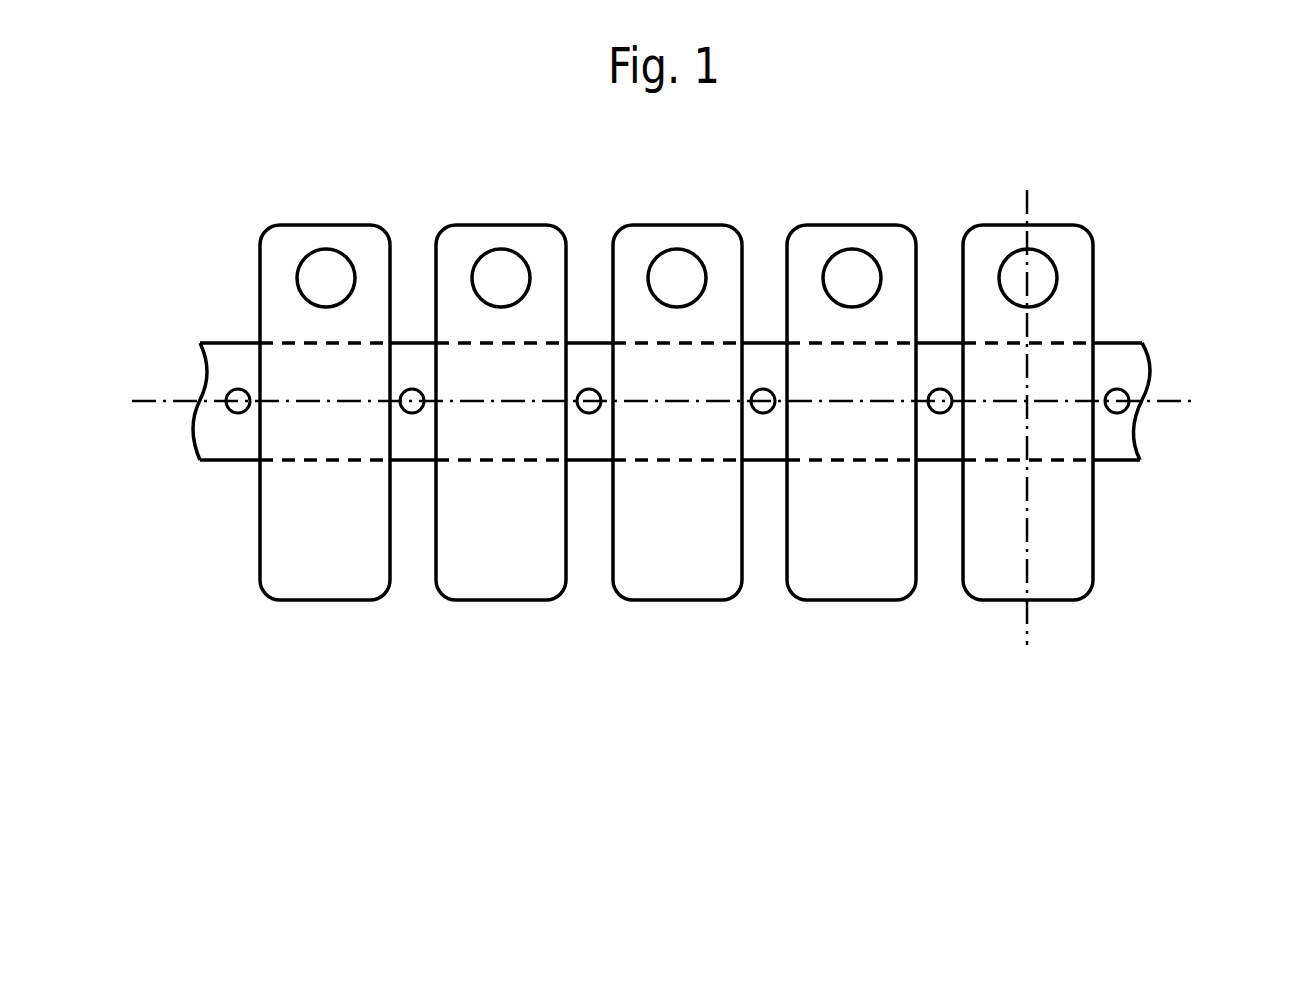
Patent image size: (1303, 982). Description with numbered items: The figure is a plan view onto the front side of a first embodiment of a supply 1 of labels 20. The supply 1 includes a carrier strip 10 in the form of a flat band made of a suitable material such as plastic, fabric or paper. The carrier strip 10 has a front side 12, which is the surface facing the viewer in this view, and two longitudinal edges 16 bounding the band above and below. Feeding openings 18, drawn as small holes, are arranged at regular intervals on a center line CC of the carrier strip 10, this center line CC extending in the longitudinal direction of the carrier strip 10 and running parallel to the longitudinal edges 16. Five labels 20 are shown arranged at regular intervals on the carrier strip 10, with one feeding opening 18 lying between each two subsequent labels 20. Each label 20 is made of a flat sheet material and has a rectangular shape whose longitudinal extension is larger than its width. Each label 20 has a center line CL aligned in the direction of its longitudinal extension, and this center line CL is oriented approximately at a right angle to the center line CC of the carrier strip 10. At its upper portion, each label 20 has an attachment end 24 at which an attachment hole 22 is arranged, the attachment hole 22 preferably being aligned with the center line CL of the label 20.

The supply 1 is at (462, 161).
The carrier strip 10 is at (1220, 478).
The front side 12 is at (1140, 367).
The longitudinal edges 16 is at (1129, 348).
The feeding openings 18 is at (940, 414).
The label 20 is at (876, 176).
The attachment hole 22 is at (1018, 248).
The attachment end 24 is at (980, 224).
The center line of label CL is at (1032, 197).
The center line of carrier strip CC is at (155, 401).